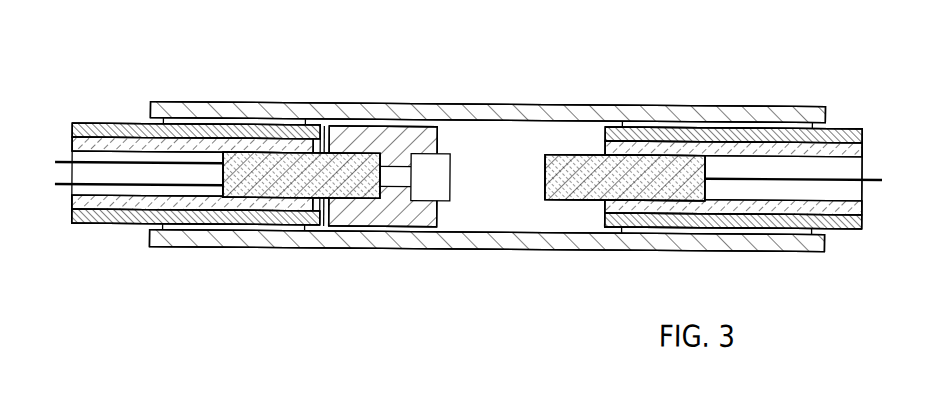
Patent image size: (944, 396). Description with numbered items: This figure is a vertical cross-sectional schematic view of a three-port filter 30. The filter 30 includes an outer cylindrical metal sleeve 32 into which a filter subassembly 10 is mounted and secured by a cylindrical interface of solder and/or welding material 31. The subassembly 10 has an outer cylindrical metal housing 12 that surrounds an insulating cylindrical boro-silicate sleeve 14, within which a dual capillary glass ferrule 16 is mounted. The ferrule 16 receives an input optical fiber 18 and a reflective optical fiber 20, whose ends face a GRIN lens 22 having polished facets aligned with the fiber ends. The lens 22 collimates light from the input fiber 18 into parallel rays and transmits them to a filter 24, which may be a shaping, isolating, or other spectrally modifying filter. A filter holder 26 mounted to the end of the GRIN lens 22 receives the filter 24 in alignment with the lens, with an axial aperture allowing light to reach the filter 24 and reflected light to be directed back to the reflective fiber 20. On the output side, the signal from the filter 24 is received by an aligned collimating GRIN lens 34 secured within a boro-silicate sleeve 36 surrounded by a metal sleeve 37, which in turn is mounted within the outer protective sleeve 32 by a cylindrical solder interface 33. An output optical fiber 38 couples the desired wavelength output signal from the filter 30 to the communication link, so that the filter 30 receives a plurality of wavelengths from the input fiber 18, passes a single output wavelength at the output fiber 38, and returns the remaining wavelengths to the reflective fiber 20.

The filter subassembly 10 is at (213, 262).
The outer cylindrical metal housing 12 is at (117, 126).
The insulating cylindrical boro-silicate sleeve 14 is at (92, 125).
The dual capillary glass ferrule 16 is at (124, 199).
The input optical fiber 18 is at (58, 163).
The reflective optical fiber 20 is at (58, 195).
The GRIN lens 22 is at (337, 215).
The filter 24 is at (431, 183).
The filter holder 26 is at (407, 138).
The three-port filter 30 is at (488, 69).
The cylindrical interface of solder and/or welding material 31 is at (182, 104).
The outer cylindrical metal sleeve 32 is at (254, 104).
The cylindrical solder interface 33 is at (812, 125).
The collimating GRIN lens 34 is at (566, 192).
The boro-silicate sleeve 36 is at (850, 145).
The metal sleeve 37 is at (758, 164).
The output optical fiber 38 is at (851, 183).